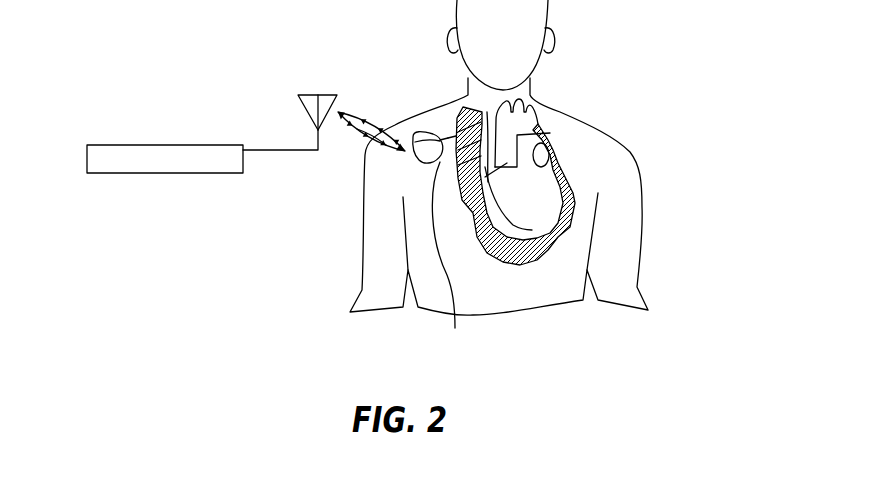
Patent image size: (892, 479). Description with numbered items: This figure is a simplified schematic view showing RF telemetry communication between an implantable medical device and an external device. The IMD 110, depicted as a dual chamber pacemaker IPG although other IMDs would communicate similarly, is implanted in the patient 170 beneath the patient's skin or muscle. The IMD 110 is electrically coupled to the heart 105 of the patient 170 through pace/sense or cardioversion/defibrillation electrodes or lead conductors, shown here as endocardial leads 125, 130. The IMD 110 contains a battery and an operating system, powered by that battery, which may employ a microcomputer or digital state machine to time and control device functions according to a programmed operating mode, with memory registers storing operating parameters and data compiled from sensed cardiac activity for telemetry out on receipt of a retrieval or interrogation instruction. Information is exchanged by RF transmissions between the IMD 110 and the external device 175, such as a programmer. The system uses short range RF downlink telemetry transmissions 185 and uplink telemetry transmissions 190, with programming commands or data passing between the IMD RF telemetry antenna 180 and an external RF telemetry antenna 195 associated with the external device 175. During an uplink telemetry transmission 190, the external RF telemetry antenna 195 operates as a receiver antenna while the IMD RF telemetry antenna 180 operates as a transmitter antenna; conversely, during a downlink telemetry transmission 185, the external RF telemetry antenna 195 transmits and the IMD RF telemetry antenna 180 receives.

The heart 105 is at (527, 268).
The IMD 110 is at (450, 256).
The endocardial lead 125 is at (444, 137).
The endocardial lead 130 is at (452, 137).
The patient 170 is at (586, 122).
The external device 175 is at (114, 145).
The IMD RF telemetry antenna 180 is at (420, 163).
The downlink telemetry transmission 185 is at (357, 129).
The uplink telemetry transmission 190 is at (365, 117).
The external RF telemetry antenna 195 is at (305, 95).